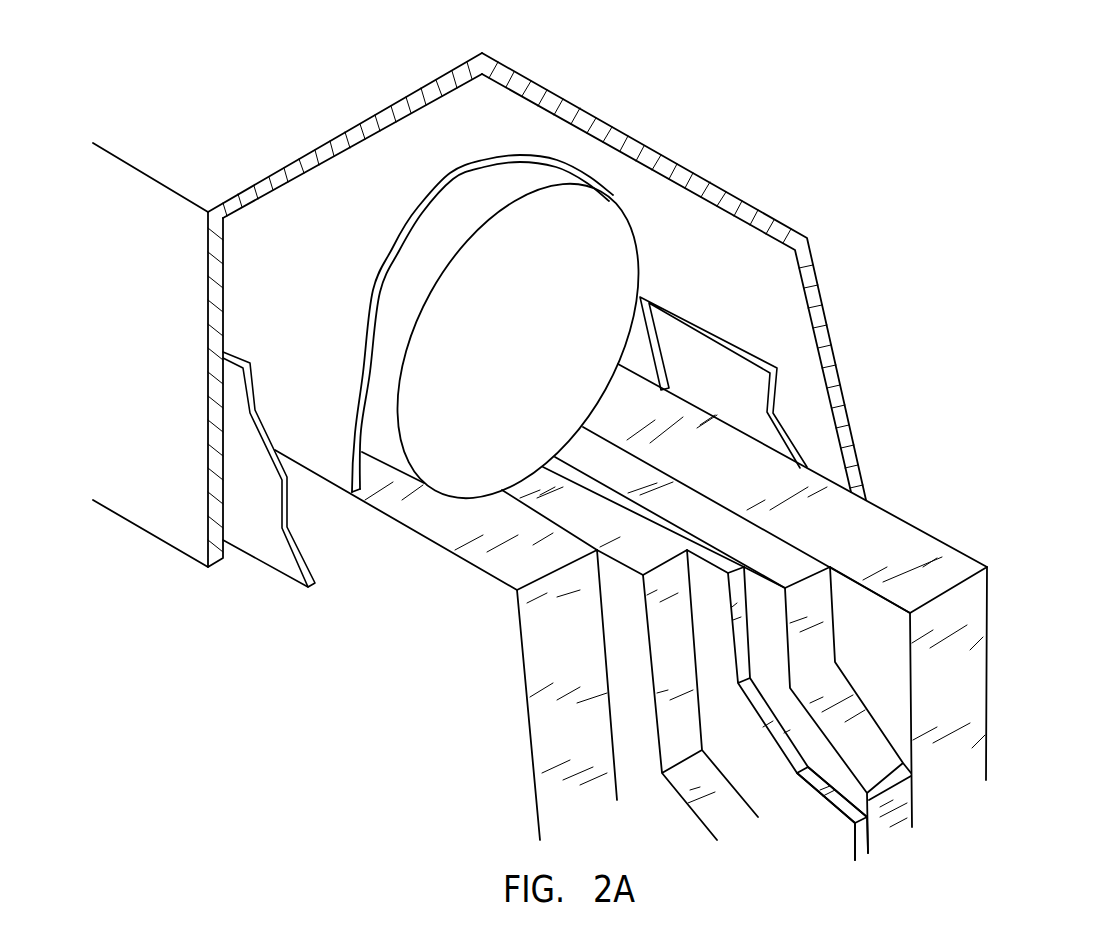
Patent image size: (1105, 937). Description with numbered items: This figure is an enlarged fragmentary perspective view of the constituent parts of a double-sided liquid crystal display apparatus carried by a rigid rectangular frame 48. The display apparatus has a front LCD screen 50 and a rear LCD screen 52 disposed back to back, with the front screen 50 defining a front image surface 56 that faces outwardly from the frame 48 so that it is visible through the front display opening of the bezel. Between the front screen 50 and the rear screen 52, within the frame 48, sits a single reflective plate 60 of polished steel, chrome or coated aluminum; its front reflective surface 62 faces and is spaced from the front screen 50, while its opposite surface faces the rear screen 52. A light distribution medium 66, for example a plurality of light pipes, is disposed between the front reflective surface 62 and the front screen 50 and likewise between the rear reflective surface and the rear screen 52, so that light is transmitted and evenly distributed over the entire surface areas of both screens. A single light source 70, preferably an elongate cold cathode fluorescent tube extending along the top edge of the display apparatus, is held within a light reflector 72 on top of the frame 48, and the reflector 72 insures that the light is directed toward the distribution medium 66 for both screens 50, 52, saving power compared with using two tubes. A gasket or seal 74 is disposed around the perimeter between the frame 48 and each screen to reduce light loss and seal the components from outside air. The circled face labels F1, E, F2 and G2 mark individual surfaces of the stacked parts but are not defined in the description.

The rigid rectangular frame 48 is at (479, 310).
The front LCD screen 50 is at (673, 621).
The rear LCD screen 52 is at (957, 680).
The front image surface 56 is at (464, 694).
The reflective plate 60 is at (838, 808).
The front reflective surface 62 is at (752, 794).
The light distribution medium 66 is at (657, 669).
The light source 70 is at (502, 362).
The light reflector 72 is at (495, 128).
The gasket or seal 74 is at (700, 318).
The face F1 is at (622, 641).
The face E is at (717, 650).
The face F2 is at (764, 610).
The face G2 is at (870, 613).